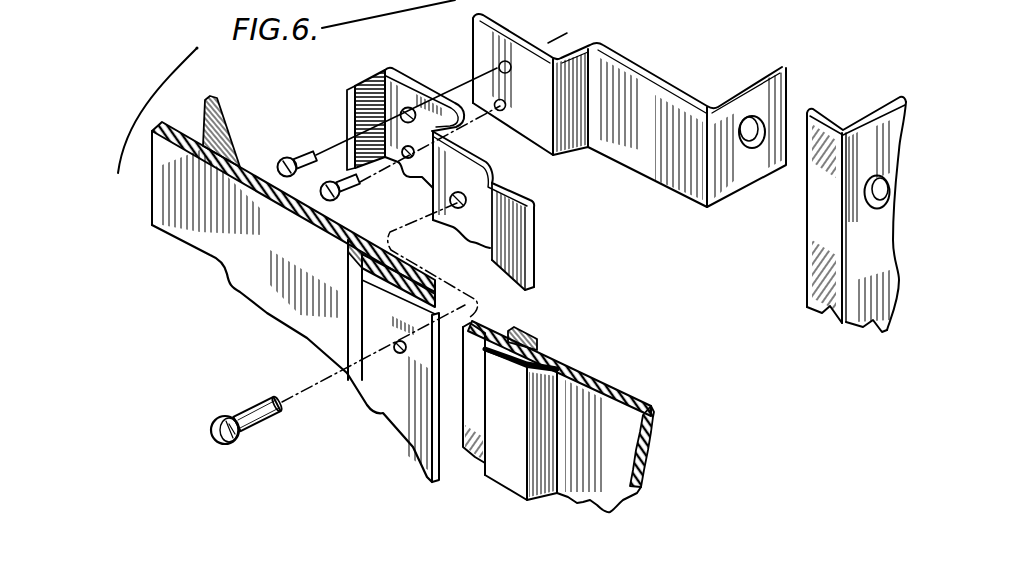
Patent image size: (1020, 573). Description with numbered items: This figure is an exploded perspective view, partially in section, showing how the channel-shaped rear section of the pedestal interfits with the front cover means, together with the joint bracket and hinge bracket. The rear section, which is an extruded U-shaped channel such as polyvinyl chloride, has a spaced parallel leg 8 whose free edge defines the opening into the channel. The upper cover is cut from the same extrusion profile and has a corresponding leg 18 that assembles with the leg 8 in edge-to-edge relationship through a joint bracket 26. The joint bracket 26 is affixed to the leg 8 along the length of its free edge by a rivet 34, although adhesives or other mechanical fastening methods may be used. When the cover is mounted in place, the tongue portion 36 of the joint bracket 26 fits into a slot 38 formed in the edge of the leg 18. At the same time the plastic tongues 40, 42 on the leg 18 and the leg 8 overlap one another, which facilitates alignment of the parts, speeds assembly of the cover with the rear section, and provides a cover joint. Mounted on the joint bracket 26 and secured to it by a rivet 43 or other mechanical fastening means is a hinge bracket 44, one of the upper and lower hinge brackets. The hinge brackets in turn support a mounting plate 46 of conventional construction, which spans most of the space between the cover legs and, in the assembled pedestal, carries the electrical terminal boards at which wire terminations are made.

The leg 8 is at (267, 291).
The leg 18 is at (576, 491).
The joint bracket 26 is at (358, 82).
The rivet 34 is at (251, 428).
The tongue portion 36 is at (538, 233).
The slot 38 is at (515, 345).
The plastic tongue 40 is at (418, 448).
The plastic tongue 42 is at (488, 335).
The rivet 43 is at (297, 157).
The hinge bracket 44 is at (667, 165).
The mounting plate 46 is at (821, 311).